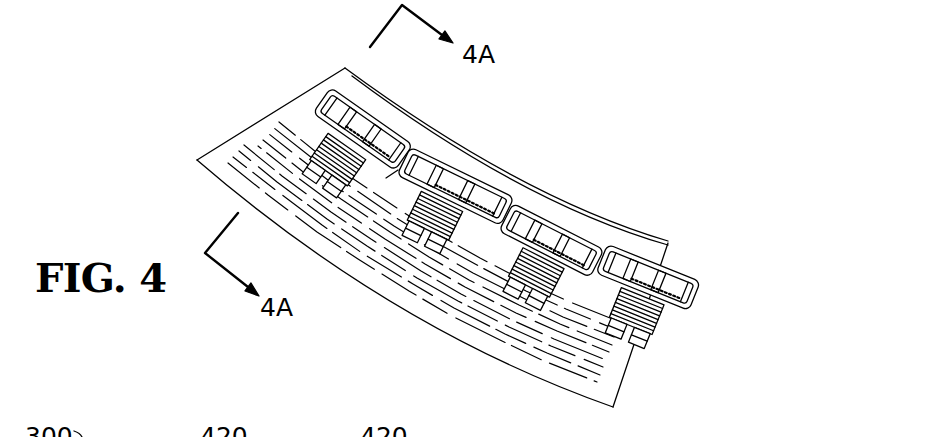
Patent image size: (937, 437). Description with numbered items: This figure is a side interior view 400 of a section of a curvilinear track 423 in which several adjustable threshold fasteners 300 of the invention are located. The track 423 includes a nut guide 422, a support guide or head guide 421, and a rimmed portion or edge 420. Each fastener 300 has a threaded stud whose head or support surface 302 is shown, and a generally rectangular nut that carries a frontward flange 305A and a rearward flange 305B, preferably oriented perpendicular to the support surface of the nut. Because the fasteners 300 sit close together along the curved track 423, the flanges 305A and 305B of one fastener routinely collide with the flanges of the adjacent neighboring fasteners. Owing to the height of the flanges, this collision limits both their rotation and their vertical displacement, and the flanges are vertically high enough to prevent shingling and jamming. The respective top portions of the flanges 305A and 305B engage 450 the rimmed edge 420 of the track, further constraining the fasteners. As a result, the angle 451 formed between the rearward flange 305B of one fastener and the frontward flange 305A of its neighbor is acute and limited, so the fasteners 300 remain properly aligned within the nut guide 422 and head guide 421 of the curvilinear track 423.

The side interior view 400 is at (652, 36).
The adjustable threshold fastener 300 is at (510, 137).
The head or support surface 302 is at (377, 113).
The frontward flange 305A is at (547, 210).
The rearward flange 305B is at (500, 228).
The rimmed portion or edge 420 is at (425, 128).
The support guide (head guide) 421 is at (653, 252).
The nut guide 422 is at (313, 97).
The curvilinear track 423 is at (610, 387).
The engagement of flange top portions with rimmed edge 450 is at (520, 227).
The angle between flanges 451 is at (392, 175).